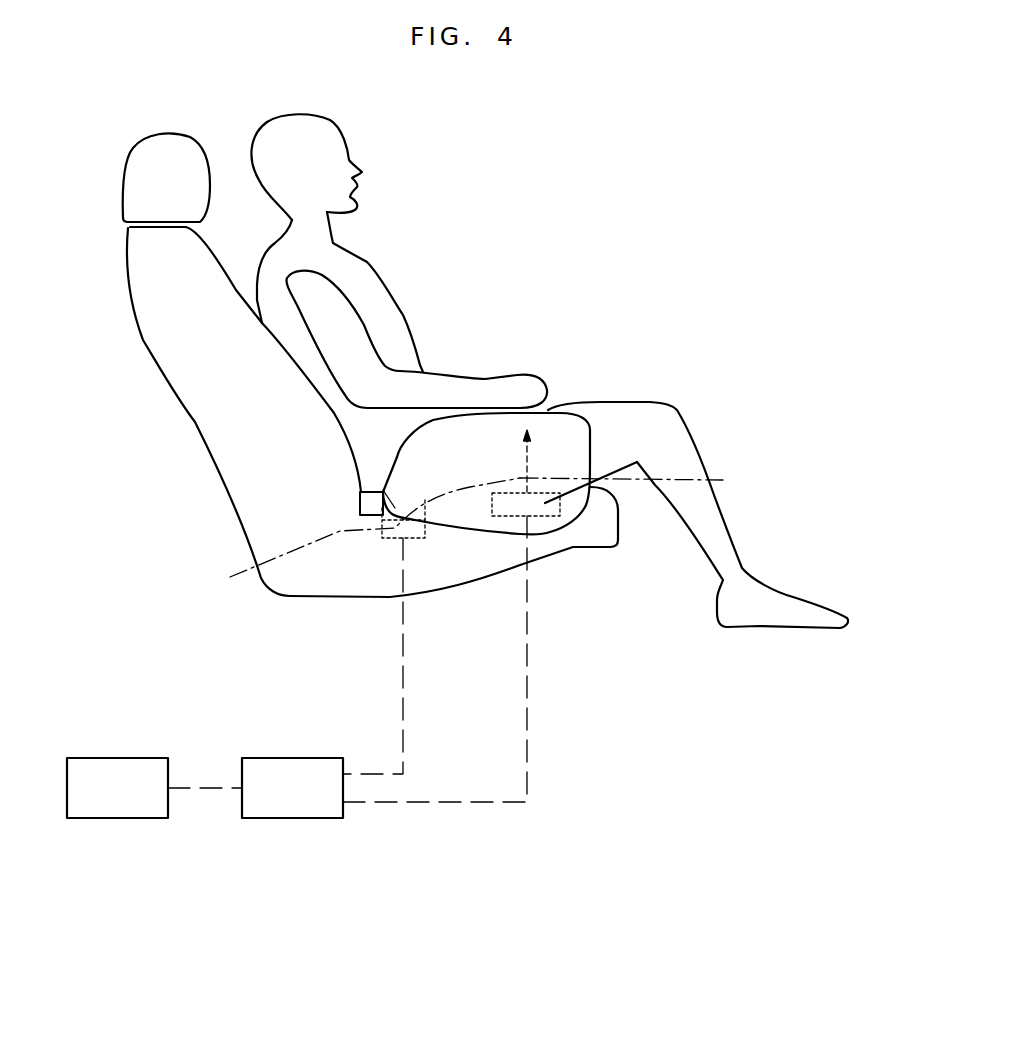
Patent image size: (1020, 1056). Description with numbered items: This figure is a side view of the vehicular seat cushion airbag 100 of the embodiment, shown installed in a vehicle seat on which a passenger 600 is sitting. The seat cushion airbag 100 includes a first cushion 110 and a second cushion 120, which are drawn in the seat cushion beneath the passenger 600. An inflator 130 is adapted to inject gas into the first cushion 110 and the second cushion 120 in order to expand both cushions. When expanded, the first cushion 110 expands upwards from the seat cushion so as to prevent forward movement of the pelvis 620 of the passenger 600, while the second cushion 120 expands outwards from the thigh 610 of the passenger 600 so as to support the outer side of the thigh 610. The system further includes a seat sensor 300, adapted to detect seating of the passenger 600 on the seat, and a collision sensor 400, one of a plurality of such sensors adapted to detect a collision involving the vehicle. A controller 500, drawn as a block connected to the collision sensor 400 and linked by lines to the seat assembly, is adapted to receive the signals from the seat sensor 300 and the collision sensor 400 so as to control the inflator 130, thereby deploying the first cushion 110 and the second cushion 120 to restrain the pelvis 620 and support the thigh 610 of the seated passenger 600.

The vehicular seat cushion airbag 100 is at (573, 400).
The first cushion 110 is at (568, 512).
The second cushion 120 is at (570, 435).
The inflator 130 is at (730, 478).
The seat sensor 300 is at (230, 577).
The collision sensor 400 is at (118, 818).
The controller 500 is at (292, 818).
The passenger 600 is at (396, 257).
The thigh 610 is at (658, 427).
The pelvis 620 is at (403, 481).